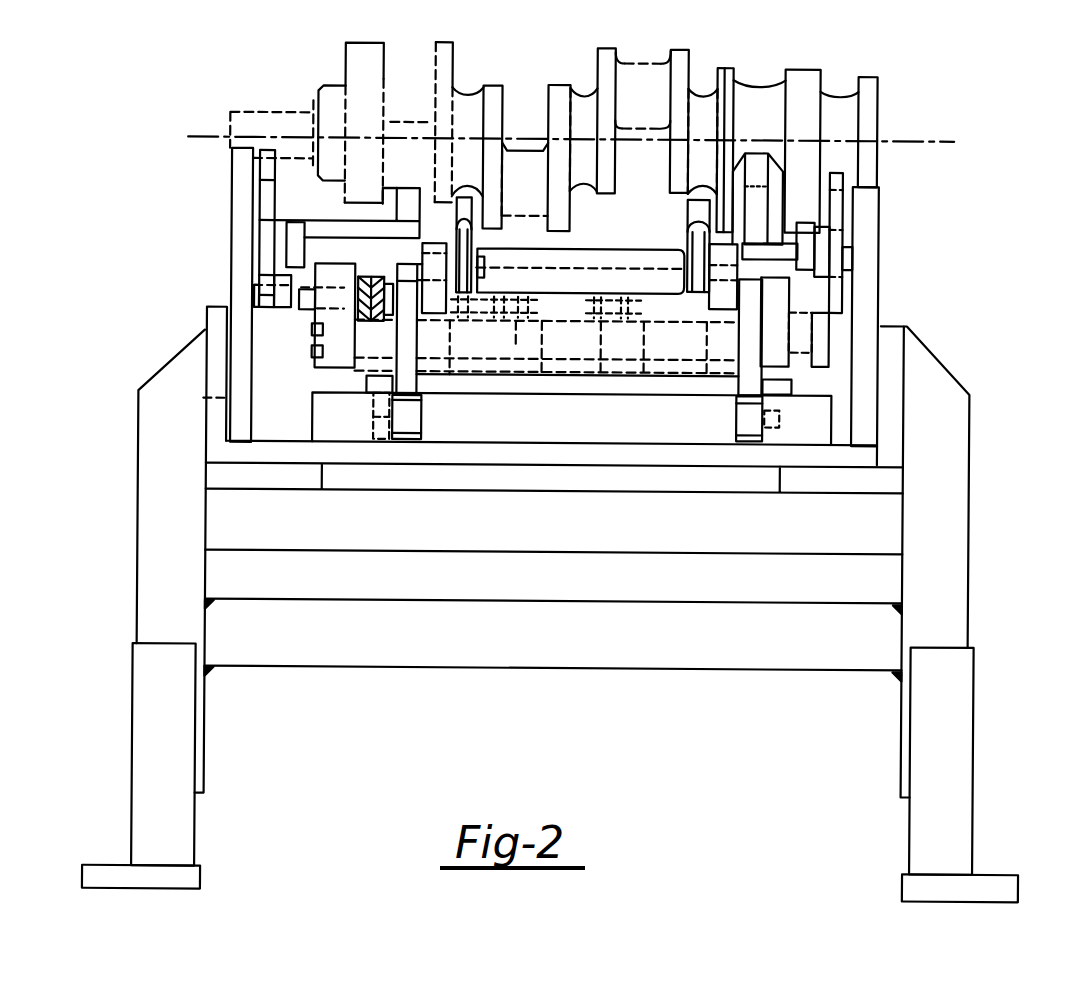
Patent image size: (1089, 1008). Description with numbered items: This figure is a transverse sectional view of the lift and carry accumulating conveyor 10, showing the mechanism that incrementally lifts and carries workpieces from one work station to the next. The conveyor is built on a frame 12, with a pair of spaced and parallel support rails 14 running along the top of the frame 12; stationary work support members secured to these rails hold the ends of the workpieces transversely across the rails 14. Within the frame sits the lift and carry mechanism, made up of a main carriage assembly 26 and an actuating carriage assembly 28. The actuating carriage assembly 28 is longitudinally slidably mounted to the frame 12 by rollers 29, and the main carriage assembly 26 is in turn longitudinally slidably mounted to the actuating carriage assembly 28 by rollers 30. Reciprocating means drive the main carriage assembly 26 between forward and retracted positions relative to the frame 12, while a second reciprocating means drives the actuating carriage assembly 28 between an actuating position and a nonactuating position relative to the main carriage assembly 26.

The lift and carry accumulating conveyor 10 is at (568, 471).
The frame 12 is at (957, 542).
The support rails 14 is at (236, 205).
The main carriage assembly 26 is at (736, 260).
The actuating carriage assembly 28 is at (752, 341).
The rollers 29 is at (406, 429).
The rollers 30 is at (426, 344).